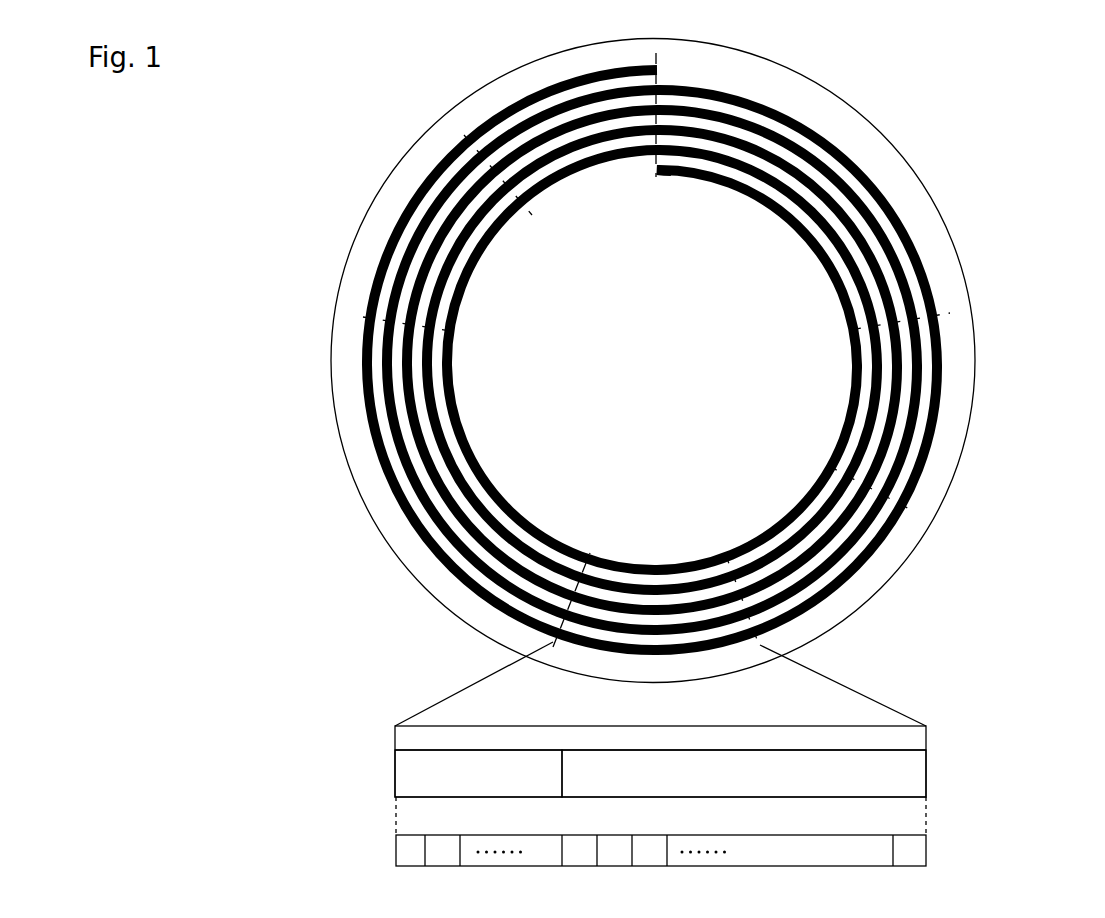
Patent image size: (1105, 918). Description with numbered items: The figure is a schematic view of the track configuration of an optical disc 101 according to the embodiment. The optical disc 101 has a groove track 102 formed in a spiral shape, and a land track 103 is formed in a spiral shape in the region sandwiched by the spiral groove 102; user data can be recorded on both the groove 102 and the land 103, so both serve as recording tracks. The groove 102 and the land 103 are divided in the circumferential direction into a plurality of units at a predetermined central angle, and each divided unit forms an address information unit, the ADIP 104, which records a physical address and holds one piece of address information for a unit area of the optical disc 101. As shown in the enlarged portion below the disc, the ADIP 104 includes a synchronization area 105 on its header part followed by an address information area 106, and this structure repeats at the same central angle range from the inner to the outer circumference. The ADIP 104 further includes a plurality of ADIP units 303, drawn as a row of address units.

The optical disc 101 is at (950, 230).
The groove track 102 is at (943, 338).
The land track 103 is at (925, 399).
The address information unit (ADIP) 104 is at (680, 757).
The synchronization area 105 is at (433, 790).
The address information area 106 is at (597, 790).
The ADIP unit 303 is at (398, 862).